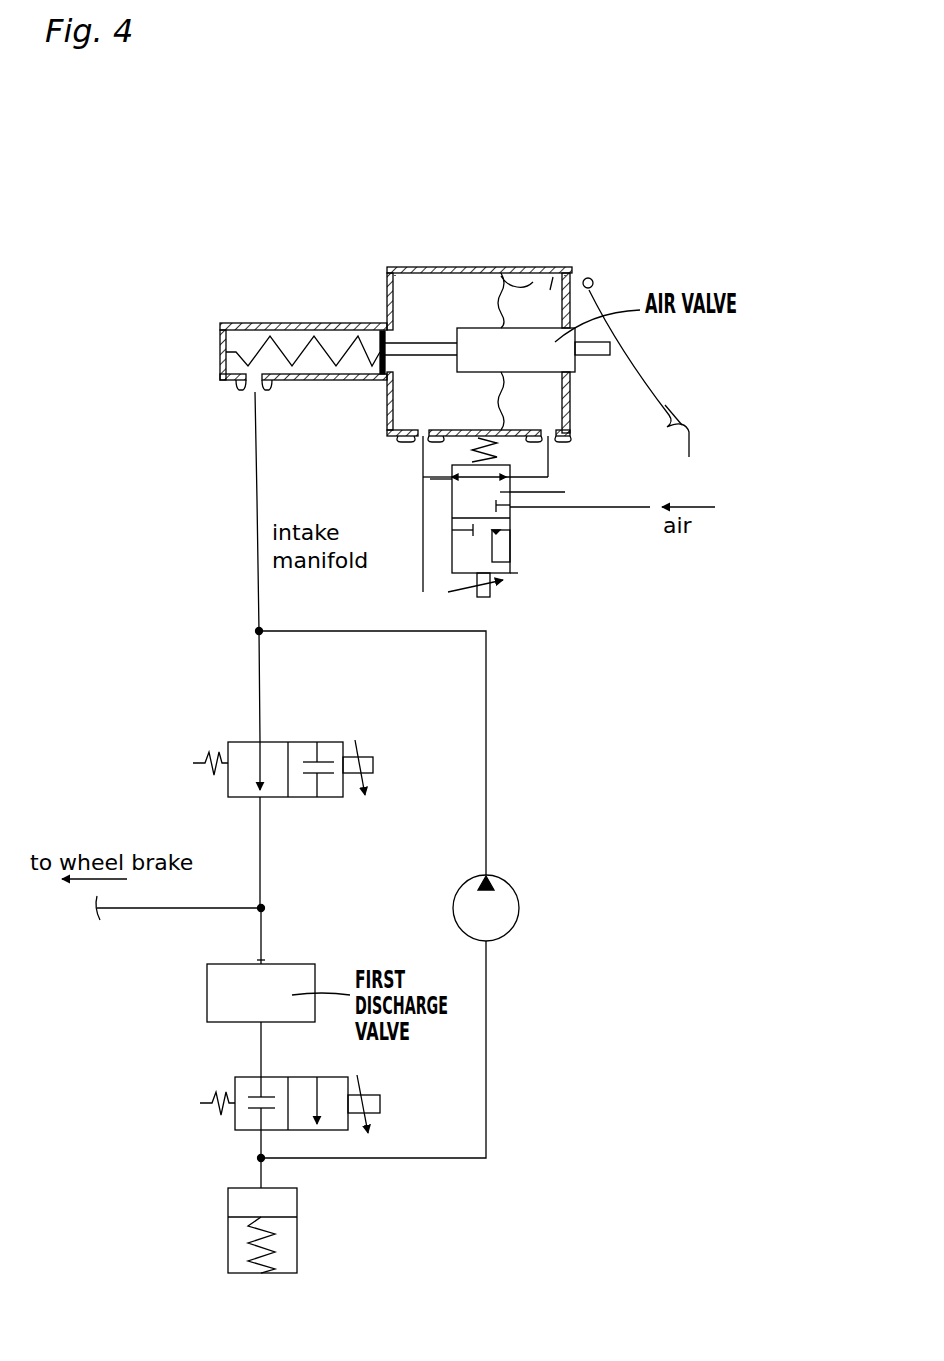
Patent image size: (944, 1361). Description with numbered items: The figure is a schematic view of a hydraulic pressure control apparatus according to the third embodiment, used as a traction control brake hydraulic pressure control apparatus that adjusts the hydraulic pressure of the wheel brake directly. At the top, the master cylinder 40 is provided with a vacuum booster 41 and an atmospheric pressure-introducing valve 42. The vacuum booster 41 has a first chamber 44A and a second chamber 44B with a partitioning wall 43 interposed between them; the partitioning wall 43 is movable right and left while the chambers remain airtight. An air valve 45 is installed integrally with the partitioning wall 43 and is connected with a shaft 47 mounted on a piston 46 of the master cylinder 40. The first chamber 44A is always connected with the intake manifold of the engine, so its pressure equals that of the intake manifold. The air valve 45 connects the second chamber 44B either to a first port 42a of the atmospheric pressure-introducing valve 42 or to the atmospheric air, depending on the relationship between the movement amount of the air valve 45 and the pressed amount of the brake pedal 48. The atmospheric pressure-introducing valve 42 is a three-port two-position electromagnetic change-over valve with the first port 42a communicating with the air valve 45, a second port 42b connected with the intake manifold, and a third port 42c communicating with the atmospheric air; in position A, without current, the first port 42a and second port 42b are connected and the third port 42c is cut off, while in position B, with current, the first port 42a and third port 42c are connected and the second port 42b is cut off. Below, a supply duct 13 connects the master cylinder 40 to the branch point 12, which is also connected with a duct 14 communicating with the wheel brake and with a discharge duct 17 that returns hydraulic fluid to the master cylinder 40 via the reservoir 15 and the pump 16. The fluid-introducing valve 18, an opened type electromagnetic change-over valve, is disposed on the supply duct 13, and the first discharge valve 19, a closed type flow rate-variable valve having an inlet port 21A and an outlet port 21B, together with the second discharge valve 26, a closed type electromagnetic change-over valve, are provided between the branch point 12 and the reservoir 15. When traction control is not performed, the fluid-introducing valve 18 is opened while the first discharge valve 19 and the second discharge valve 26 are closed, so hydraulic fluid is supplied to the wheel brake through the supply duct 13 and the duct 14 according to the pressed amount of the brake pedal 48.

The branch point 12 is at (263, 906).
The supply duct 13 is at (257, 498).
The duct 14 is at (145, 909).
The reservoir 15 is at (248, 1273).
The pump 16 is at (519, 912).
The discharge duct 17 is at (264, 936).
The fluid-introducing valve 18 is at (273, 738).
The first discharge valve 19 is at (207, 985).
The inlet port 21A is at (260, 961).
The outlet port 21B is at (264, 1024).
The second discharge valve 26 is at (230, 1130).
The master cylinder 40 is at (278, 323).
The vacuum booster 41 is at (477, 267).
The atmospheric pressure-introducing valve 42 is at (511, 523).
The first port 42a is at (511, 478).
The second port 42b is at (452, 480).
The third port 42c is at (512, 507).
The partitioning wall 43 is at (544, 267).
The first chamber 44A is at (403, 267).
The second chamber 44B is at (573, 266).
The air valve 45 is at (565, 364).
The piston 46 is at (362, 323).
The shaft 47 is at (423, 363).
The brake pedal 48 is at (651, 387).
The position A is at (548, 494).
The position B is at (513, 573).